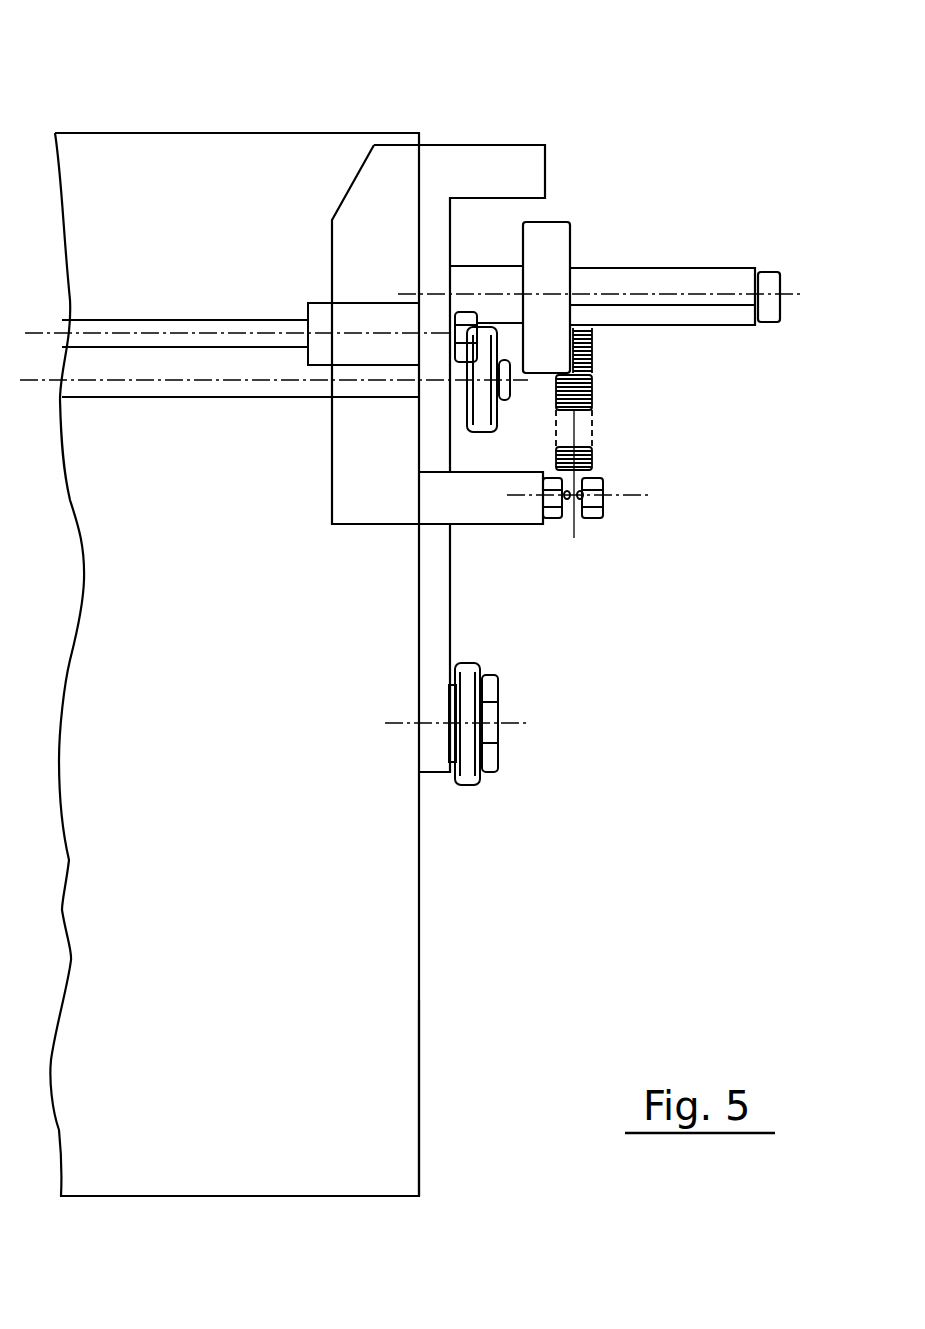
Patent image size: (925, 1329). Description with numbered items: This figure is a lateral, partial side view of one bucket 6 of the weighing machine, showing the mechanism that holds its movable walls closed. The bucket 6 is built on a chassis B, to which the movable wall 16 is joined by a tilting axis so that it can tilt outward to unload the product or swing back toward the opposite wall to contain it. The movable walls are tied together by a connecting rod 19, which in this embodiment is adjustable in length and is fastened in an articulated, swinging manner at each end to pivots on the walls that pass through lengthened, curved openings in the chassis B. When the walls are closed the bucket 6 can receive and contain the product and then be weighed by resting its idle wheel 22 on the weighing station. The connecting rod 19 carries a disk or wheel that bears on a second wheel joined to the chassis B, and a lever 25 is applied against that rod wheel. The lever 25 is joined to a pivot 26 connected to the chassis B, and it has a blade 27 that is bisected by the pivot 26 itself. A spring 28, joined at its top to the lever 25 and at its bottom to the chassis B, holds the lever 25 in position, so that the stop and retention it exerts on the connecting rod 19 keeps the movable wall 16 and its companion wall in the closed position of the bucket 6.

The bucket 6 is at (242, 132).
The chassis B is at (492, 144).
The movable wall 16 is at (382, 1015).
The connecting rod 19 is at (482, 418).
The idle wheel 22 is at (470, 758).
The lever 25 is at (550, 240).
The pivot 26 is at (772, 283).
The blade 27 is at (693, 317).
The spring 28 is at (593, 400).